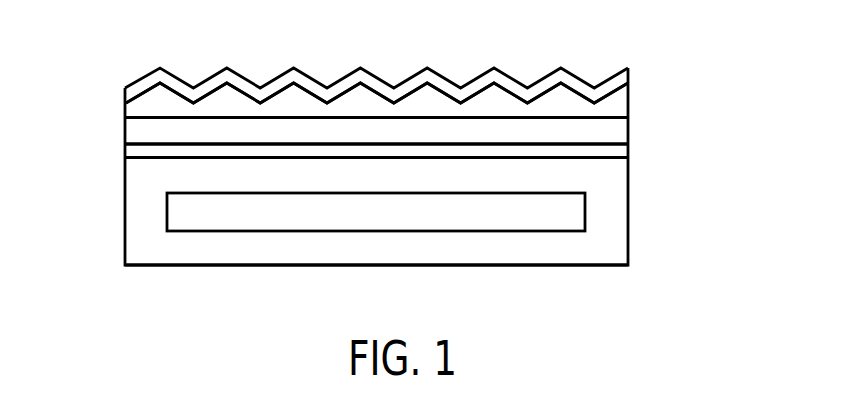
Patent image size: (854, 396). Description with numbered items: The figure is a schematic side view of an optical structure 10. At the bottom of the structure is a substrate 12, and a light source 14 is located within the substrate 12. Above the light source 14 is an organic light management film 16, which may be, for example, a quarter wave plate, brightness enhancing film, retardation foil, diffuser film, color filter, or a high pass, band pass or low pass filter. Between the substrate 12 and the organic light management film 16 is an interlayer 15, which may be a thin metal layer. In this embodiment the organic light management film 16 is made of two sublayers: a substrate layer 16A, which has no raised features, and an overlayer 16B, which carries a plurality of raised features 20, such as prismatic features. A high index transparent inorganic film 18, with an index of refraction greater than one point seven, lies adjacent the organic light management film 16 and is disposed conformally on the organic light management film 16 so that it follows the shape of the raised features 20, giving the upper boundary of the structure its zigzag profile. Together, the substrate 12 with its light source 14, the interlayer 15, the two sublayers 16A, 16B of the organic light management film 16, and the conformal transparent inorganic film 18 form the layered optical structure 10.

The optical structure 10 is at (724, 132).
The substrate 12 is at (618, 218).
The light source 14 is at (500, 222).
The interlayer 15 is at (628, 150).
The organic light management film 16 is at (636, 82).
The substrate layer 16A is at (137, 130).
The overlayer 16B is at (620, 97).
The transparent inorganic film 18 is at (607, 90).
The raised features 20 is at (160, 84).